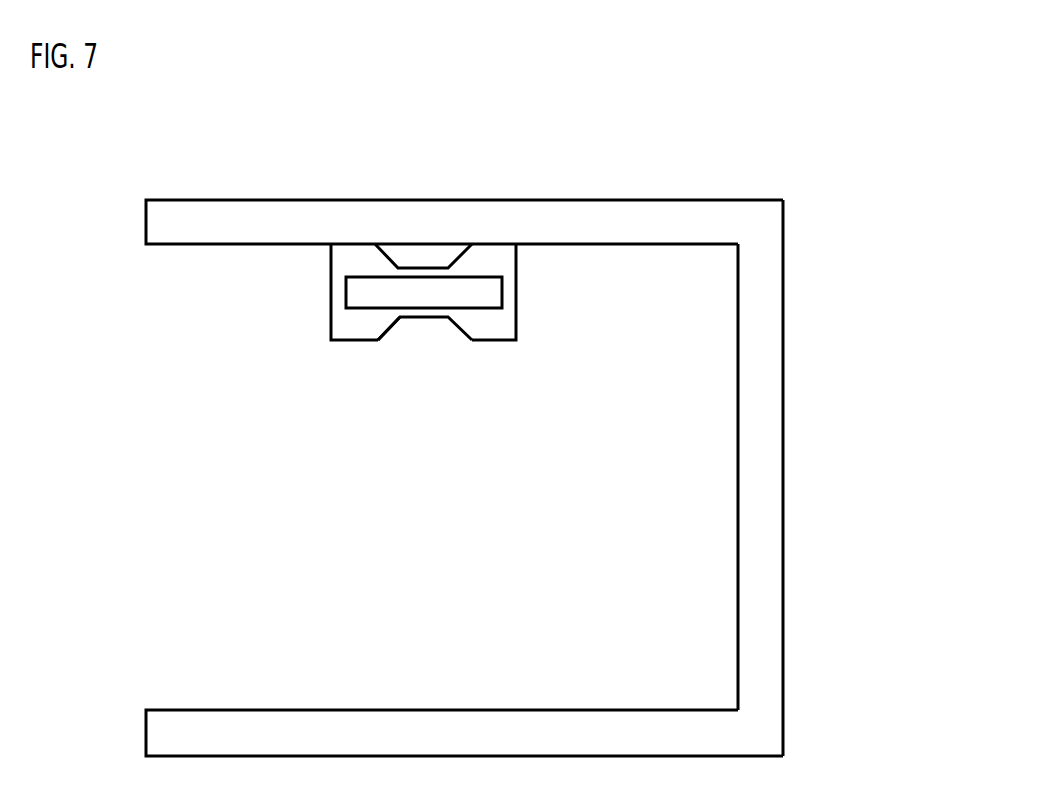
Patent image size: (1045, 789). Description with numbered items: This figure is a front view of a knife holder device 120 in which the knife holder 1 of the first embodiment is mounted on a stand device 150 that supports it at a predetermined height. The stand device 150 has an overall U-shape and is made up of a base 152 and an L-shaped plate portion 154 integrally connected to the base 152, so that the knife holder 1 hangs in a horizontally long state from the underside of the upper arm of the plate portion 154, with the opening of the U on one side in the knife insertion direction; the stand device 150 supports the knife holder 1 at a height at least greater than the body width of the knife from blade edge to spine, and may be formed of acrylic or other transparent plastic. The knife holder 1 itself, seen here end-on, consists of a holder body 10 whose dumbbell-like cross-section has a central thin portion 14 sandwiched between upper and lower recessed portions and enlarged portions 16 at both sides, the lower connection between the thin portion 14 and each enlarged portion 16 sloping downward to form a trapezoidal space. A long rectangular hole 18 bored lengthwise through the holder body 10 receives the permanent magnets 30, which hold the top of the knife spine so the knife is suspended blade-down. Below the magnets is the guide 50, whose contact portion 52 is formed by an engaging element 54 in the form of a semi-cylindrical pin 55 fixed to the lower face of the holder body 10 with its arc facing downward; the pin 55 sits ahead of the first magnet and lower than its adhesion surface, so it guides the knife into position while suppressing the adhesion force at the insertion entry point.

The knife holder 1 is at (420, 277).
The holder body 10 is at (422, 277).
The thin portion 14 is at (424, 267).
The enlarged portion 16 is at (340, 258).
The hole 18 is at (500, 293).
The magnet 30 is at (467, 195).
The guide 50 is at (434, 395).
The contact portion 52 is at (407, 327).
The engaging element 54 is at (456, 395).
The pin 55 is at (456, 395).
The knife holder device 120 is at (528, 460).
The stand device 150 is at (783, 497).
The base 152 is at (412, 710).
The L-shaped plate portion 154 is at (765, 328).